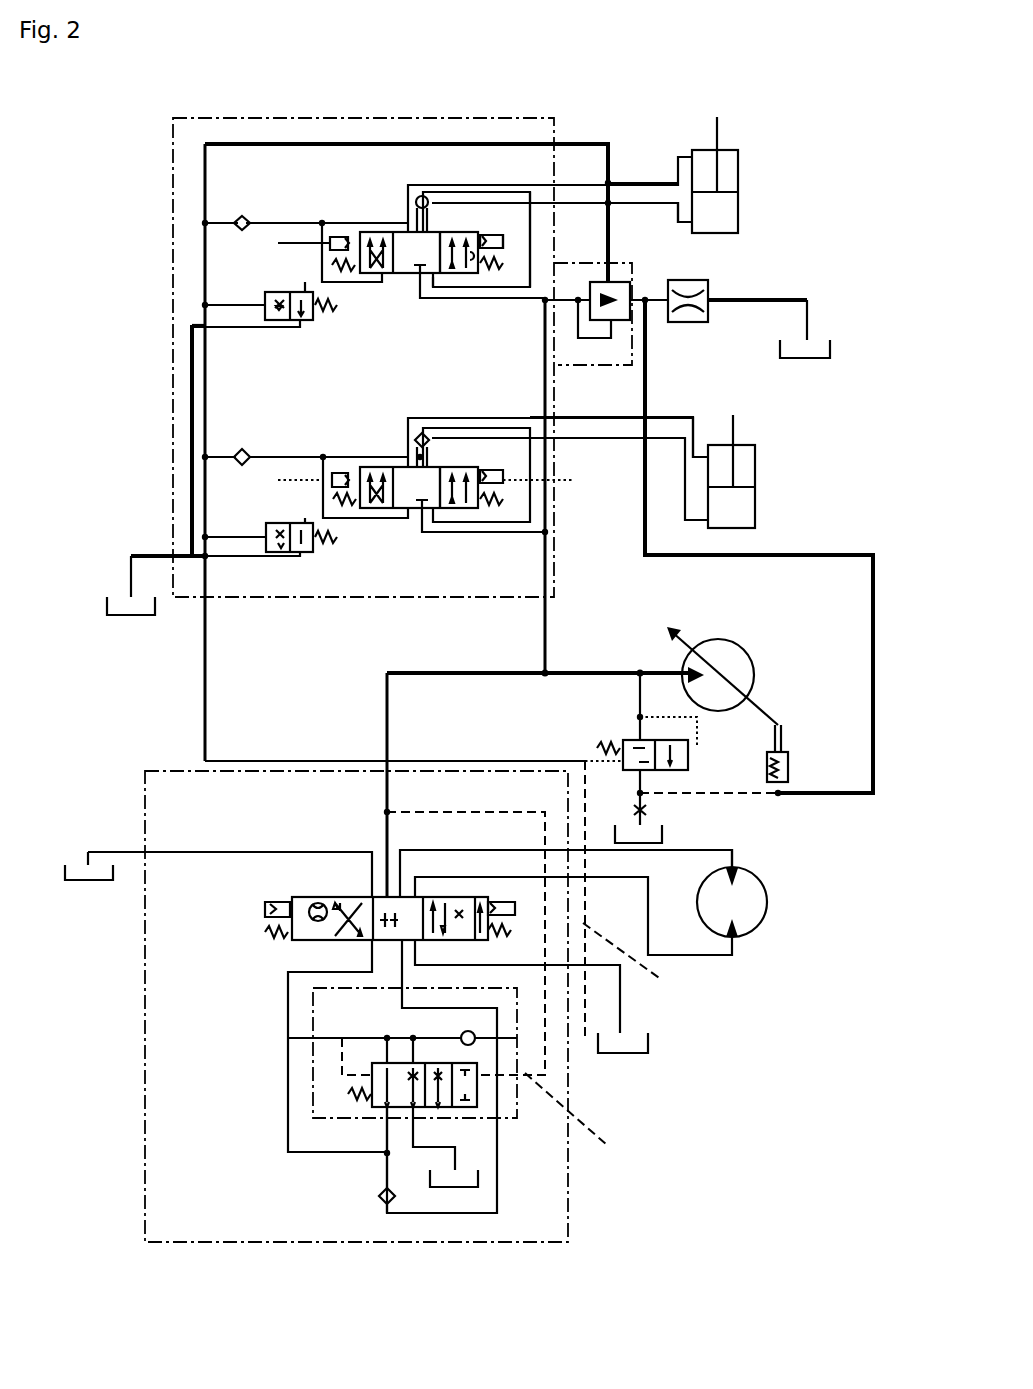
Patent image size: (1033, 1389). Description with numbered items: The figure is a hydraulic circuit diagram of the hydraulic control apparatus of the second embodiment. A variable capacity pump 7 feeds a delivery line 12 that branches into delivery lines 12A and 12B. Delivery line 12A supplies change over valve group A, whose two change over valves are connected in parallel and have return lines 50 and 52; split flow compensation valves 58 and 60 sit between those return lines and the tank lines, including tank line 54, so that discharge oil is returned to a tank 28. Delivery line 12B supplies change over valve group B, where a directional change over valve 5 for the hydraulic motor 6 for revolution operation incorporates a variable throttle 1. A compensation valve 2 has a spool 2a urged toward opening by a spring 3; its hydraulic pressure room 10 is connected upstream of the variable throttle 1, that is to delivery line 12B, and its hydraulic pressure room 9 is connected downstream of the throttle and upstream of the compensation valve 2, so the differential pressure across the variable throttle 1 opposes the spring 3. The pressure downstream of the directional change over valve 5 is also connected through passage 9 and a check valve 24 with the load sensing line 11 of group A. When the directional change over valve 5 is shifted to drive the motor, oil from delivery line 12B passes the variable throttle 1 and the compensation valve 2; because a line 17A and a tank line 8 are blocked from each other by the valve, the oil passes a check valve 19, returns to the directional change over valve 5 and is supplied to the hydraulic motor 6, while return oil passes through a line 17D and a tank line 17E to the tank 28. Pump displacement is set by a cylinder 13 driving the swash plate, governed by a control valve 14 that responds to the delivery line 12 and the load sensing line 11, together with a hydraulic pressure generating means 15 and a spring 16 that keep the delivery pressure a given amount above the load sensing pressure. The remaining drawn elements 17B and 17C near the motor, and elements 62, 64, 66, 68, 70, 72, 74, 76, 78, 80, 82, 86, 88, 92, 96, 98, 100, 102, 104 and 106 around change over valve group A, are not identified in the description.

The variable throttle 1 is at (290, 897).
The compensation valve 2 is at (310, 1027).
The spool 2a is at (398, 1108).
The spring 3 is at (360, 1098).
The directional change over valve 5 is at (343, 940).
The hydraulic motor 6 is at (767, 902).
The variable capacity pump 7 is at (718, 638).
The tank line 8 is at (258, 853).
The hydraulic pressure room 9 is at (342, 1072).
The hydraulic pressure room 10 is at (612, 1148).
The load sensing line 11 is at (190, 510).
The delivery line 12 is at (595, 672).
The delivery line 12A is at (548, 610).
The delivery line 12B is at (418, 672).
The cylinder 13 is at (790, 770).
The control valve 14 is at (693, 772).
The hydraulic pressure generating means 15 is at (648, 809).
The spring 16 is at (603, 745).
The line 17A is at (287, 1150).
The line 17B is at (440, 1213).
The motor line 17C is at (733, 858).
The line 17D is at (705, 956).
The tank line 17E is at (622, 1012).
The check valve 19 is at (378, 1198).
The check valve 24 is at (460, 1032).
The tank 28 is at (131, 617).
The return line 50 is at (362, 522).
The return line 52 is at (382, 285).
The tank line 54 is at (240, 558).
The split flow compensation valve 58 is at (266, 527).
The split flow compensation valve 60 is at (265, 294).
The valve section 62 is at (458, 236).
The check valve 64 is at (411, 183).
The line 66 is at (540, 265).
The pilot port 68 is at (508, 236).
The cylinder line 70 is at (624, 208).
The hydraulic cylinder 72 is at (738, 215).
The cylinder line 74 is at (636, 181).
The line 76 is at (467, 288).
The supply line 78 is at (272, 222).
The pilot line 80 is at (322, 254).
The check valve 82 is at (238, 214).
The line 86 is at (200, 296).
The valve block 88 is at (663, 267).
The check valve 92 is at (615, 153).
The throttle 96 is at (700, 278).
The line 98 is at (648, 375).
The hydraulic cylinder 100 is at (755, 513).
The check valve 102 is at (396, 455).
The check valve 104 is at (236, 448).
The valve section 106 is at (468, 487).